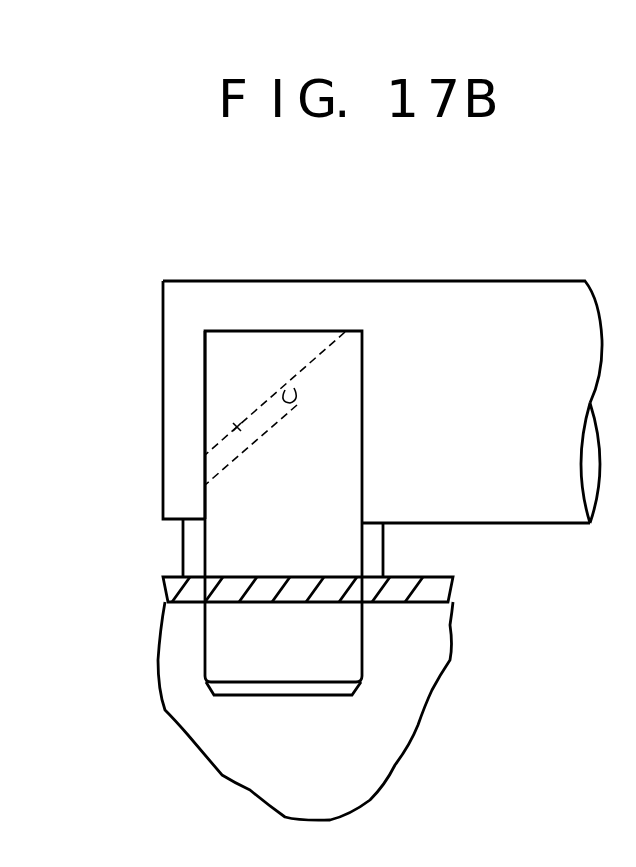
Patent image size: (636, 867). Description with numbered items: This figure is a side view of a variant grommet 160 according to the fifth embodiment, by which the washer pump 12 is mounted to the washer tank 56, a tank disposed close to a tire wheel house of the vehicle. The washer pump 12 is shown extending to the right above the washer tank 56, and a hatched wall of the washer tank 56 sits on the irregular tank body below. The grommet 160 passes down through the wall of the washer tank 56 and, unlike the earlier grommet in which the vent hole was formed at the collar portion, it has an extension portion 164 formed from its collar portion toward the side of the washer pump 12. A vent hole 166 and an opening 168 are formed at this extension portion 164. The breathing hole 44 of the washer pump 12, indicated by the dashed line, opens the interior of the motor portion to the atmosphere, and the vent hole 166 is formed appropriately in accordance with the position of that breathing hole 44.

The washer pump 12 is at (481, 278).
The grommet 160 is at (283, 330).
The breathing hole 44 is at (345, 332).
The extension portion 164 is at (205, 384).
The vent hole 166 is at (233, 425).
The opening 168 is at (205, 467).
The washer tank 56 is at (450, 577).